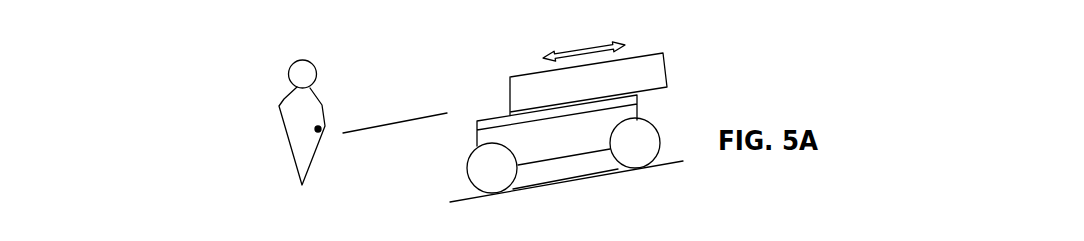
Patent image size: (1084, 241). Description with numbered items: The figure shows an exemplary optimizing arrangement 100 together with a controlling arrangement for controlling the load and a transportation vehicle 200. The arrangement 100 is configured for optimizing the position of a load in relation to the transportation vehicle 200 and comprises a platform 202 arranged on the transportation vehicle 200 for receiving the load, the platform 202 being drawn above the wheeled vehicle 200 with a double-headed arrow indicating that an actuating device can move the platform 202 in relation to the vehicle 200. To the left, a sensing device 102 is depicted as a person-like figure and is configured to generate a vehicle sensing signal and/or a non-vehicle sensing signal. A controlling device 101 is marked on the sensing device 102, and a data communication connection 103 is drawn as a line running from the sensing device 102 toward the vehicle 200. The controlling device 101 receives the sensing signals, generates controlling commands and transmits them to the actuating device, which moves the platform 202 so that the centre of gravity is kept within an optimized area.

The arrangement 100 is at (486, 114).
The controlling device 101 is at (335, 139).
The sensing device 102 is at (272, 112).
The data communication connection 103 is at (390, 124).
The transportation vehicle 200 is at (576, 154).
The platform 202 is at (663, 47).